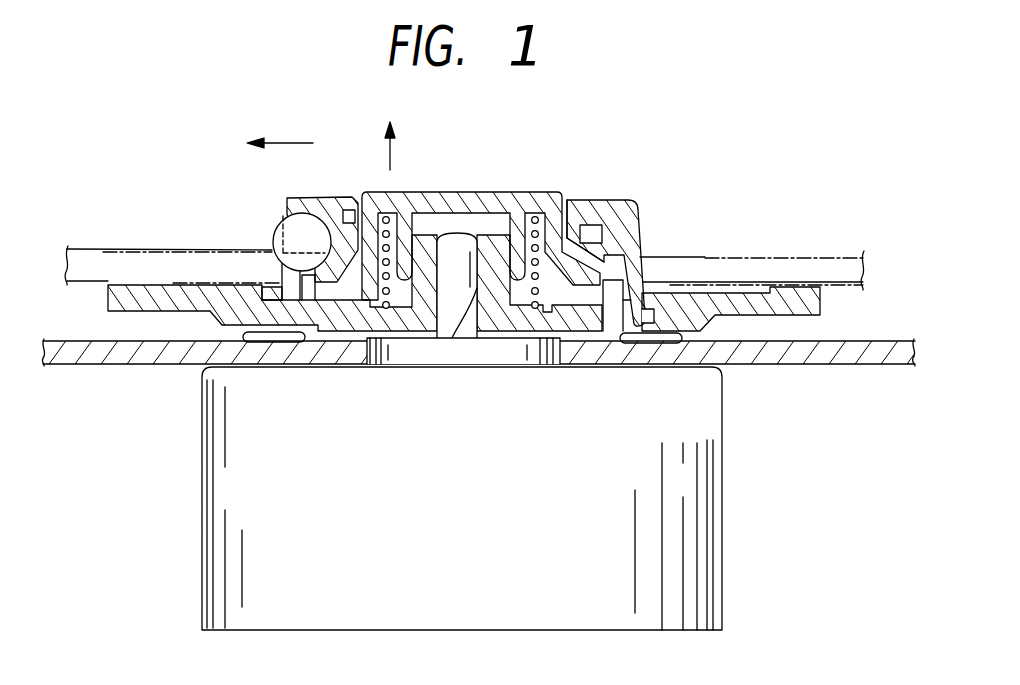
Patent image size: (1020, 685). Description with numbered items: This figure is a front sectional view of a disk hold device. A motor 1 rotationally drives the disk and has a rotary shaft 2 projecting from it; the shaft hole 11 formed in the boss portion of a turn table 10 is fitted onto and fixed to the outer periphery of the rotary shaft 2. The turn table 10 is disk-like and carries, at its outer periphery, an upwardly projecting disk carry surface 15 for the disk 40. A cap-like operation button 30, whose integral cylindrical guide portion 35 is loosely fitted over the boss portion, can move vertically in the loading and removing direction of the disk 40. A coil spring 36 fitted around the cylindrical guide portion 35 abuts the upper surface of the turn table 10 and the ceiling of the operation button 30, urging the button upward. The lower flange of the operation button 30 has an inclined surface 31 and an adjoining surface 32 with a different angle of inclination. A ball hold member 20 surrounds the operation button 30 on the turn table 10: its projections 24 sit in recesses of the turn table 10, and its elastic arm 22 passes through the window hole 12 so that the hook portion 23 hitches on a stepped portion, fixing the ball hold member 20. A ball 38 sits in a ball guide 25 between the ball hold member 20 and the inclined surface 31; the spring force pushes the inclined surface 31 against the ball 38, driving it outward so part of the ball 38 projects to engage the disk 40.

The motor 1 is at (712, 522).
The rotary shaft 2 is at (458, 243).
The turn table 10 is at (818, 307).
The shaft hole 11 is at (457, 331).
The window hole 12 is at (606, 318).
The disk carry surface 15 is at (131, 285).
The ball hold member 20 is at (637, 210).
The elastic arm 22 is at (637, 273).
The hook portion 23 is at (650, 315).
The projection 24 is at (265, 287).
The ball guide 25 is at (340, 209).
The operation button 30 is at (510, 200).
The inclined surface 31 is at (613, 253).
The another surface 32 is at (573, 250).
The cylindrical guide portion 35 is at (533, 293).
The coil spring 36 is at (560, 307).
The ball 38 is at (278, 222).
The disk 40 is at (765, 254).